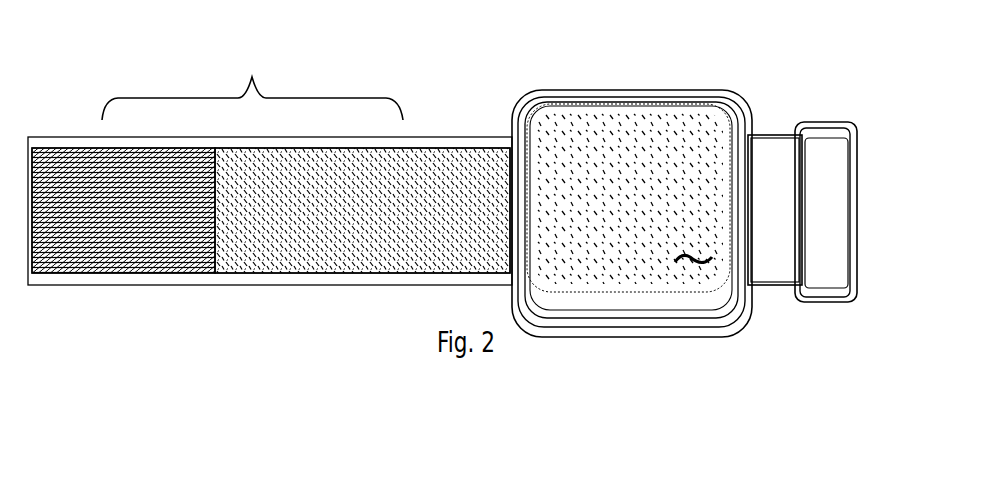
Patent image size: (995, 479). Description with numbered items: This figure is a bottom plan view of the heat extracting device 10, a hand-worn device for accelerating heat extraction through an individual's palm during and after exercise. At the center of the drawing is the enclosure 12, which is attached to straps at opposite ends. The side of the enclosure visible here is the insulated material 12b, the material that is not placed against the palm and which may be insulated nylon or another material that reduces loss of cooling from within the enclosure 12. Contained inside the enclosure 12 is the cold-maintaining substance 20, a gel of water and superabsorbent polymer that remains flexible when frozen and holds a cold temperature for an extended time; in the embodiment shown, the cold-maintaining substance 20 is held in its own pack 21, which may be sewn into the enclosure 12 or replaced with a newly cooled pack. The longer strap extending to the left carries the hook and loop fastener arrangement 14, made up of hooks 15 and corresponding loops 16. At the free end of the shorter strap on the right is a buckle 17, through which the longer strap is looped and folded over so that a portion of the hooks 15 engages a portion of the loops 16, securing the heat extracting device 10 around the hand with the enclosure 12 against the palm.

The heat extracting device 10 is at (233, 315).
The hook and loop fastener arrangement 14 is at (271, 152).
The hooks 15 is at (112, 250).
The loops 16 is at (332, 247).
The enclosure 12 is at (697, 340).
The insulated material of the enclosure 12b is at (700, 267).
The cold-maintaining substance 20 is at (603, 247).
The pack 21 is at (627, 292).
The buckle 17 is at (848, 313).